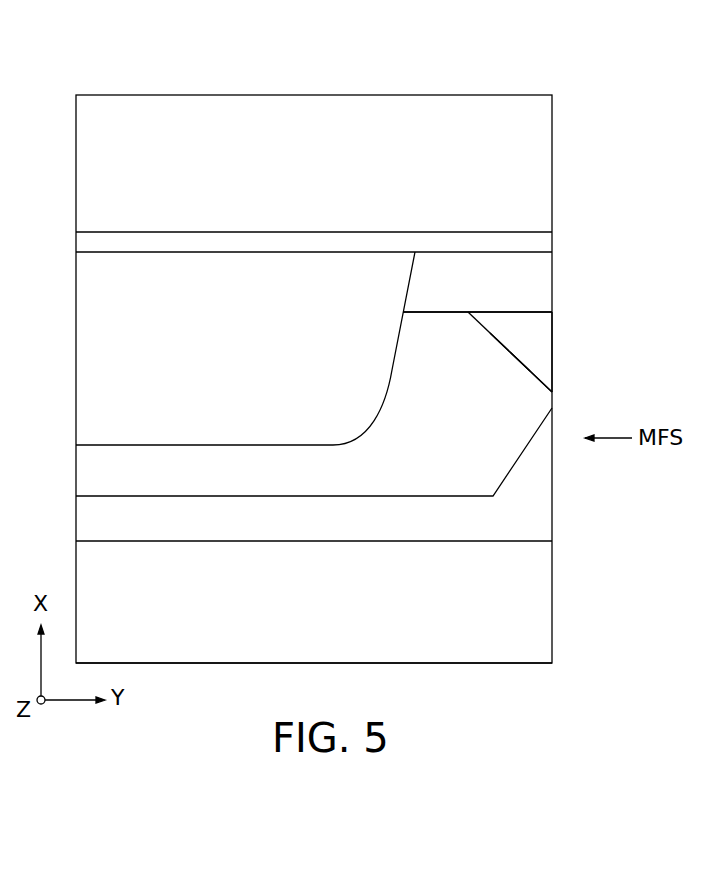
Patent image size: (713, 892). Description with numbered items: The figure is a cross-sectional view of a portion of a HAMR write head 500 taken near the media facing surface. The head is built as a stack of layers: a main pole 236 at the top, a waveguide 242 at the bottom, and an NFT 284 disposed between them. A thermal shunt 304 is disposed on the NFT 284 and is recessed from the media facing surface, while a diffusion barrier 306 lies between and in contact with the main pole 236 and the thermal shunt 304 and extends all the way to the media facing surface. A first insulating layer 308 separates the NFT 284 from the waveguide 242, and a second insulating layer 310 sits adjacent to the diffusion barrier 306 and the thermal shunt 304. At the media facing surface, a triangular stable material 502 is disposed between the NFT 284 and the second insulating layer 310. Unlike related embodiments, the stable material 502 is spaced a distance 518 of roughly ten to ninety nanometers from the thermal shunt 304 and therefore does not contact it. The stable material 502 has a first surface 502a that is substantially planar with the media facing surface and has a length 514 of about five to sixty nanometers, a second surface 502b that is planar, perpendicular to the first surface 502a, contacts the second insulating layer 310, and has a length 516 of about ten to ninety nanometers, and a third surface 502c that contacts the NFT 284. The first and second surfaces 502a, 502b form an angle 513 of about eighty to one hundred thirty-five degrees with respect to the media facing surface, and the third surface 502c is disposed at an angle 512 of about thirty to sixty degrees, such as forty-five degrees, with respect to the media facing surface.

The HAMR write head 500 is at (117, 54).
The main pole 236 is at (334, 205).
The diffusion barrier 306 is at (539, 242).
The thermal shunt 304 is at (217, 343).
The second insulating layer 310 is at (477, 283).
The NFT 284 is at (411, 469).
The first insulating layer 308 is at (271, 530).
The waveguide 242 is at (296, 630).
The stable material 502 is at (523, 340).
The first surface 502a is at (522, 312).
The second surface 502b is at (482, 310).
The third surface 502c is at (517, 358).
The angle 512 is at (530, 358).
The angle 513 is at (552, 330).
The length 514 is at (587, 312).
The length 516 is at (552, 281).
The distance 518 is at (482, 328).